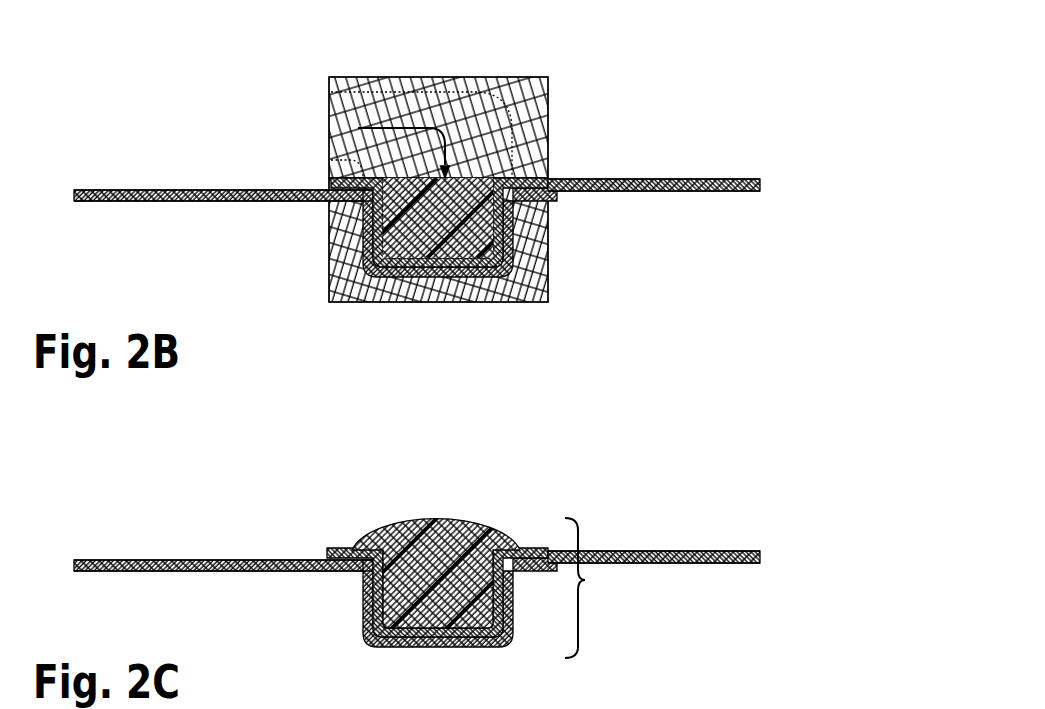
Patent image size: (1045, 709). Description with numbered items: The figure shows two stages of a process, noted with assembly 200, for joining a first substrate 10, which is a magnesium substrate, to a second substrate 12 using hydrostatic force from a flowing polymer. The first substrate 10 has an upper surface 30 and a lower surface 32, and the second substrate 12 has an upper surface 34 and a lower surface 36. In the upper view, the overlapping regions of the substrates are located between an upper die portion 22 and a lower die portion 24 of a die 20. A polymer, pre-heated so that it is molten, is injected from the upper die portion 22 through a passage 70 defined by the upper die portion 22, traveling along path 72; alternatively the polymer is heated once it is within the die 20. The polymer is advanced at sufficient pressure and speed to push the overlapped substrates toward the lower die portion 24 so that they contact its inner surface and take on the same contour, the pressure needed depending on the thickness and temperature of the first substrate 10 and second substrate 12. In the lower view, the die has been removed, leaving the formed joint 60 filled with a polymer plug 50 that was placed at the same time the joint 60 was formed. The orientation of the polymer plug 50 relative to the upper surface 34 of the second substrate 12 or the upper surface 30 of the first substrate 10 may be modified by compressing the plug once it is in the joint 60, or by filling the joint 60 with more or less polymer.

In FIG. 2B, the first substrate 10 is at (137, 190).
In FIG. 2C, the first substrate 10 is at (138, 560).
In FIG. 2B, the second substrate 12 is at (742, 180).
In FIG. 2C, the second substrate 12 is at (748, 552).
In FIG. 2B, the die 20 is at (305, 70).
In FIG. 2B, the upper die portion 22 is at (520, 100).
In FIG. 2B, the lower die portion 24 is at (515, 292).
In FIG. 2B, the upper surface of the first substrate 30 is at (210, 190).
In FIG. 2C, the upper surface of the first substrate 30 is at (212, 560).
In FIG. 2B, the lower surface of the first substrate 32 is at (203, 203).
In FIG. 2C, the lower surface of the first substrate 32 is at (203, 573).
In FIG. 2B, the upper surface of the second substrate 34 is at (692, 180).
In FIG. 2C, the upper surface of the second substrate 34 is at (697, 552).
In FIG. 2B, the lower surface of the second substrate 36 is at (697, 194).
In FIG. 2C, the lower surface of the second substrate 36 is at (703, 565).
In FIG. 2B, the polymer plug 50 is at (398, 250).
In FIG. 2C, the polymer plug 50 is at (425, 530).
In FIG. 2C, the joint 60 is at (592, 588).
In FIG. 2B, the passage 70 is at (363, 110).
In FIG. 2B, the path 72 is at (315, 128).
In FIG. 2B, the assembly 200 is at (718, 90).